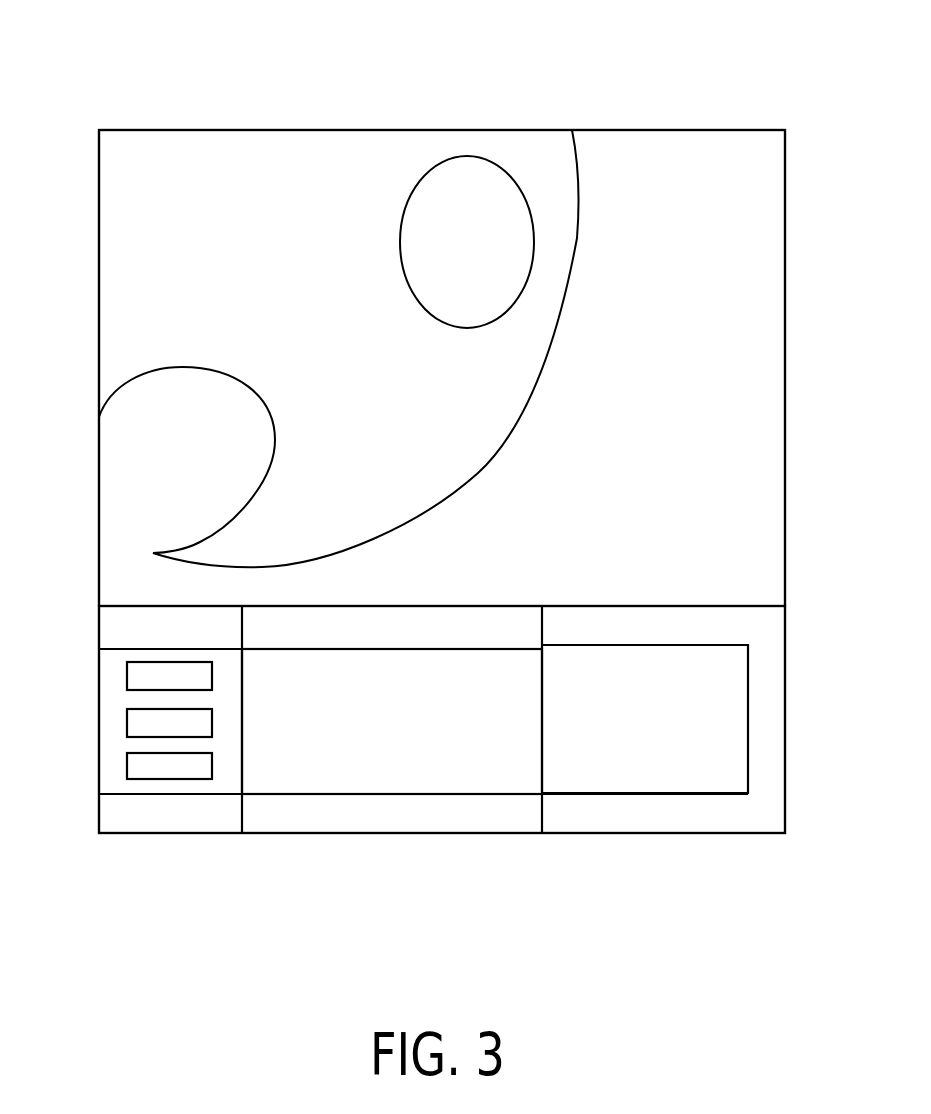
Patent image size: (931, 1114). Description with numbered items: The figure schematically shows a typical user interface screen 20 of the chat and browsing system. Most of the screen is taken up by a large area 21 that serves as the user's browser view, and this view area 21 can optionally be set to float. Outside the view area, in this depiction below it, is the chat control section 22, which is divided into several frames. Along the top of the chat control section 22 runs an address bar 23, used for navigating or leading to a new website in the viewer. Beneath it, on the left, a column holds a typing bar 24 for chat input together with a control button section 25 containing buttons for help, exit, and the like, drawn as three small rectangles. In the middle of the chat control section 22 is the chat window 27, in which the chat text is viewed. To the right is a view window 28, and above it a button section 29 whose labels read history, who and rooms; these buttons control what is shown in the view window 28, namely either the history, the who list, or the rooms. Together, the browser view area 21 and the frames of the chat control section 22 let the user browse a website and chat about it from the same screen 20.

The user interface screen 20 is at (352, 98).
The browser view area 21 is at (776, 258).
The chat control section 22 is at (77, 778).
The address bar 23 is at (253, 637).
The typing bar 24 is at (269, 823).
The control button section 25 is at (115, 722).
The chat window 27 is at (403, 785).
The view window 28 is at (594, 786).
The button section 29 is at (777, 640).